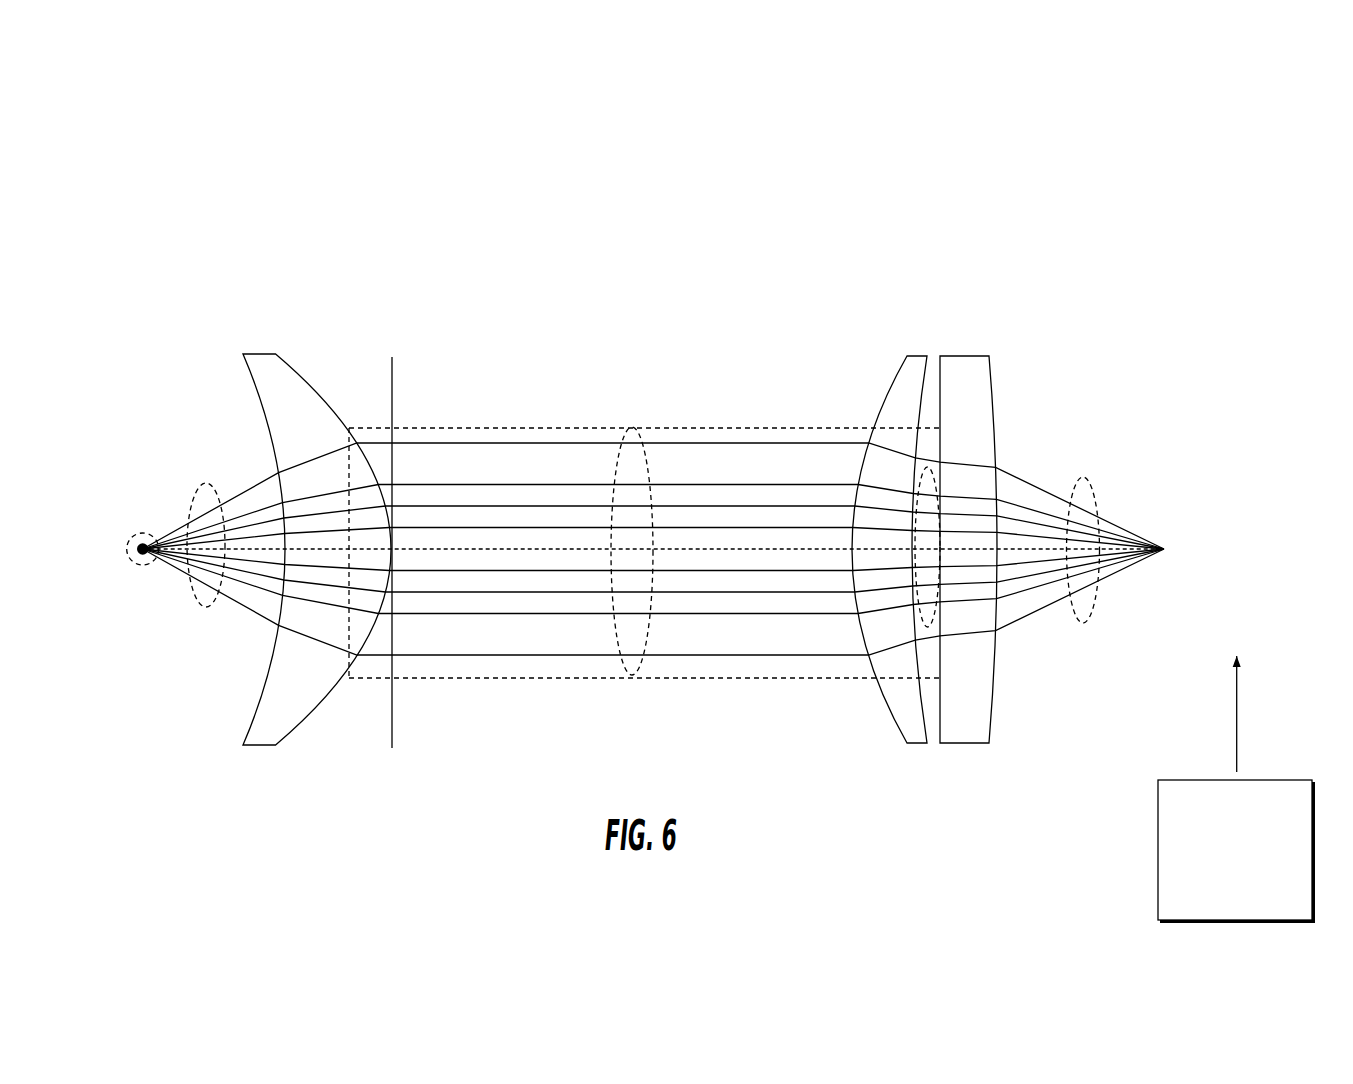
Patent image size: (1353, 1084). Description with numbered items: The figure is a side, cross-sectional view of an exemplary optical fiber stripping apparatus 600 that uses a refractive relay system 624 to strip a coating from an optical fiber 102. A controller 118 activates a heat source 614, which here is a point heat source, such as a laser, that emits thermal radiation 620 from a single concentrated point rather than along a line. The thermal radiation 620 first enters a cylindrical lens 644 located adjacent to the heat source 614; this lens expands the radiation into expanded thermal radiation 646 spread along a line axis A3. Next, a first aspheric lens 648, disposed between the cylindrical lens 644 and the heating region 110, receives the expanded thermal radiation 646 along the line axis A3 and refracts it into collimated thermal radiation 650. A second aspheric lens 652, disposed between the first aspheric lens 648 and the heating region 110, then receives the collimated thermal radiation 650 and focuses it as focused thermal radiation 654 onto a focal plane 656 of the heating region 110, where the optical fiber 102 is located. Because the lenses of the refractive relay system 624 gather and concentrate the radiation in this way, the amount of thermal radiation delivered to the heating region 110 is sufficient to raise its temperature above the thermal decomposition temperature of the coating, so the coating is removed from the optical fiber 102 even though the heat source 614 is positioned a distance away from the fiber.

The optical fiber stripping apparatus 600 is at (940, 143).
The refractive relay system 624 is at (629, 282).
The second aspheric lens 652 is at (312, 383).
The collimated thermal radiation 650 is at (634, 427).
The first aspheric lens 648 is at (896, 358).
The cylindrical lens 644 is at (982, 357).
The expanded thermal radiation 646 is at (935, 470).
The focal plane 656 is at (145, 527).
The heating region 110 is at (140, 543).
The optical fiber 102 is at (128, 565).
The focused thermal radiation 654 is at (188, 607).
The thermal radiation 620 is at (1088, 623).
The line axis A3 is at (833, 682).
The heat source 614 is at (1185, 568).
The controller 118 is at (1250, 878).